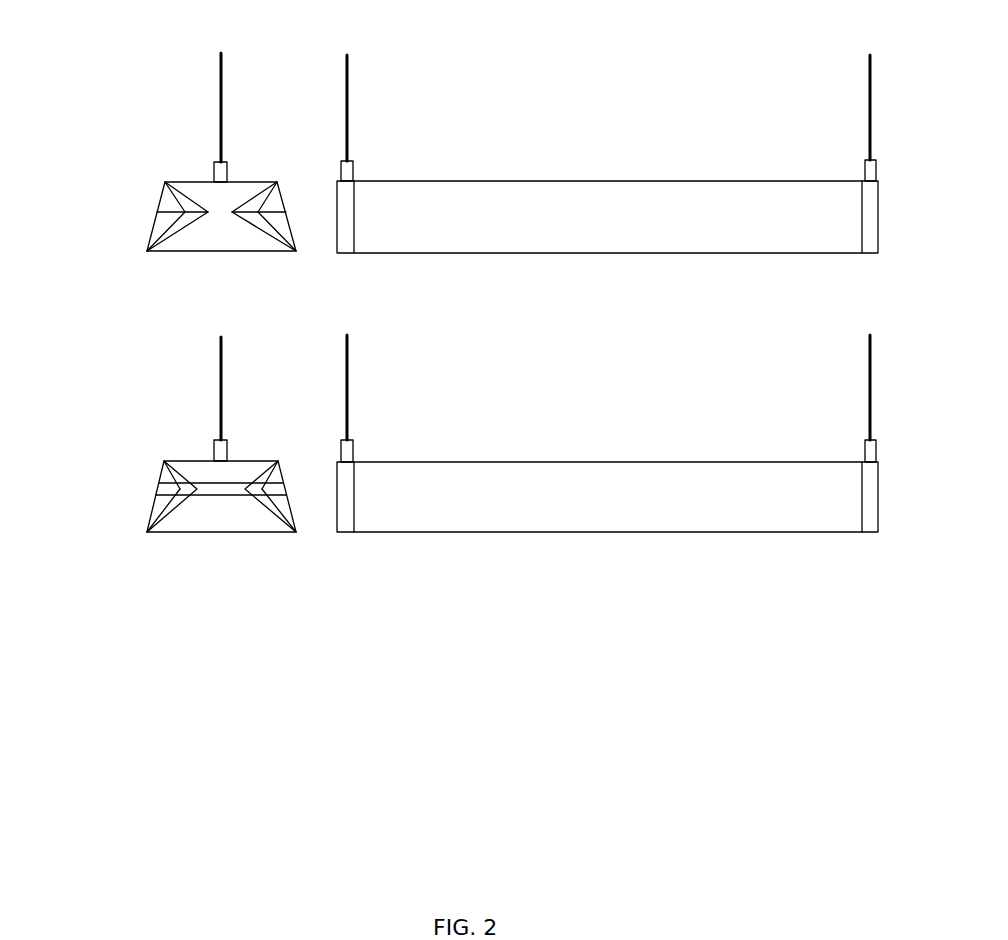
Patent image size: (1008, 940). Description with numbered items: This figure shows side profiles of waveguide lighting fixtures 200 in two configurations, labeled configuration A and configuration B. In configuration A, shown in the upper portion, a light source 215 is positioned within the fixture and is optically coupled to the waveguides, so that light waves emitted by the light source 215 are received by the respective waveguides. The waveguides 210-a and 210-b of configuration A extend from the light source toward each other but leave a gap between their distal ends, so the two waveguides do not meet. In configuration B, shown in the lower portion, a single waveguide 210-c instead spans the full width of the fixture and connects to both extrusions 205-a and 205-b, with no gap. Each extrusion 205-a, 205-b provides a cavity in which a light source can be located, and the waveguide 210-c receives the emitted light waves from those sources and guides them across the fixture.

The lighting system 200 is at (706, 894).
The light source 215 is at (166, 204).
The first waveguide 210-a is at (196, 204).
The second waveguide 210-b is at (237, 212).
The first extrusion 205-a is at (163, 493).
The second extrusion 205-b is at (317, 440).
The waveguide 210-c is at (206, 497).